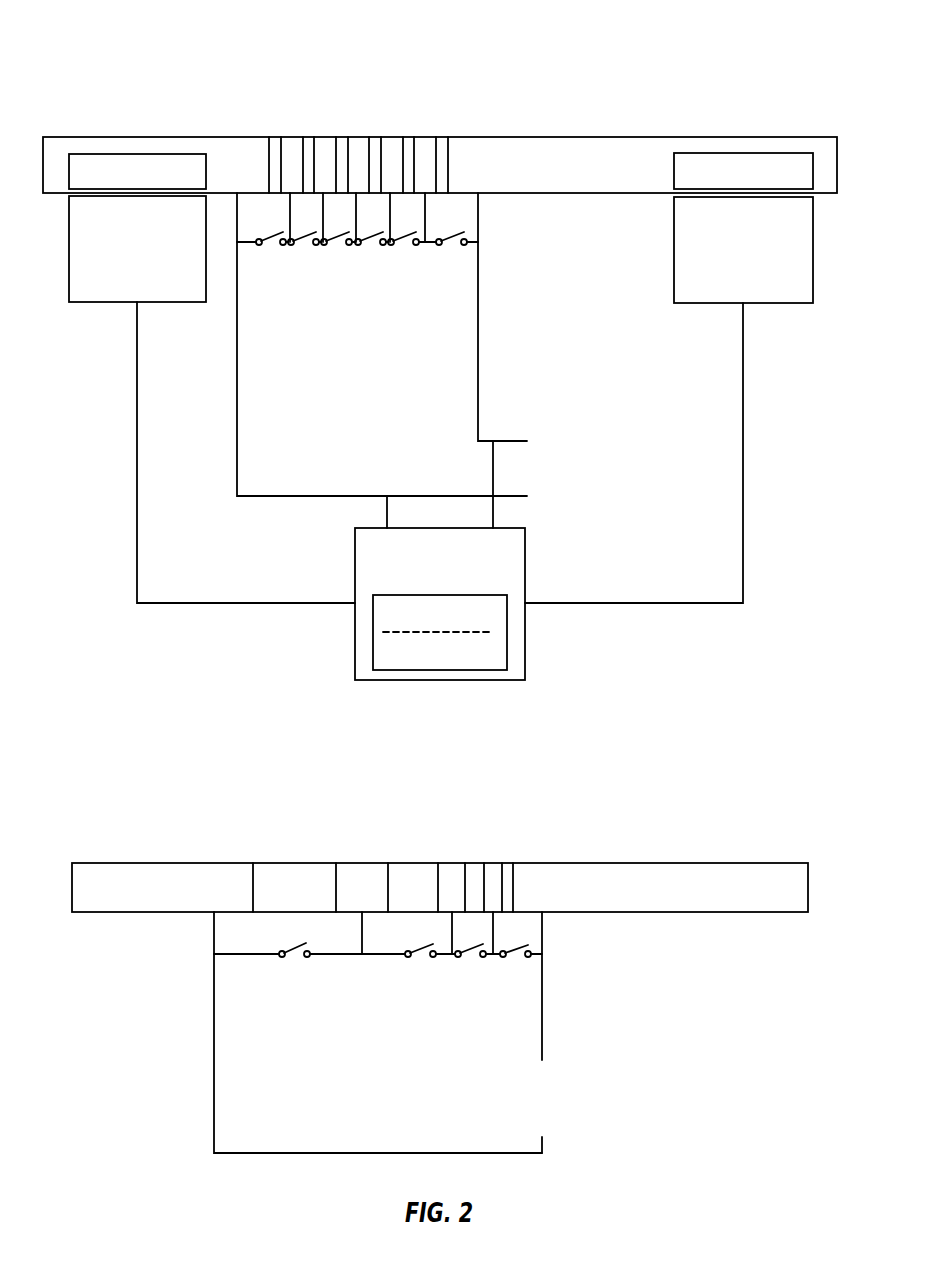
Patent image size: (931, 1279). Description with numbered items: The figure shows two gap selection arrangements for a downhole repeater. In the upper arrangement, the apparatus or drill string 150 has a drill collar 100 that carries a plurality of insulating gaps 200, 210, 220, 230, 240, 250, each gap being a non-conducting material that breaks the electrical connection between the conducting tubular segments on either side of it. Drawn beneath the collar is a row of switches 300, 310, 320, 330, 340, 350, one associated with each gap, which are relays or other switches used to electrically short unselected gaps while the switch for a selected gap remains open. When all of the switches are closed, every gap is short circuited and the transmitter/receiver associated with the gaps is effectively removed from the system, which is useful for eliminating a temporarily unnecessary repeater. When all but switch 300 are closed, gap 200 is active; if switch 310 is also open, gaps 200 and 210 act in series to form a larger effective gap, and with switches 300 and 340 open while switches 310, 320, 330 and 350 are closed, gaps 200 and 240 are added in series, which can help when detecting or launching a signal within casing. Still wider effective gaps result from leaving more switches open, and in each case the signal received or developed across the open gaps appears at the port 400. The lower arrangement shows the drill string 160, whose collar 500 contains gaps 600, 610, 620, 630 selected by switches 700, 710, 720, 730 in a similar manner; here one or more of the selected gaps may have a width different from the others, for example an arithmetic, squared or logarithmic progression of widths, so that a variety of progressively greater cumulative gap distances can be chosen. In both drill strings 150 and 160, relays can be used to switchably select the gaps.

The apparatus 150 is at (156, 46).
The drill collar 100 is at (105, 135).
The insulating gap 250 is at (276, 137).
The insulating gap 240 is at (308, 137).
The insulating gap 230 is at (342, 137).
The insulating gap 220 is at (373, 137).
The insulating gap 210 is at (408, 137).
The insulating gap 200 is at (443, 137).
The switch 350 is at (265, 245).
The switch 340 is at (301, 241).
The switch 330 is at (336, 243).
The switch 320 is at (371, 241).
The switch 310 is at (406, 243).
The switch 300 is at (452, 242).
The port 400 is at (610, 392).
The drill string 160 is at (160, 775).
The transmission line / bus 500 is at (135, 863).
The gap 630 is at (295, 863).
The gap 620 is at (412, 863).
The gap 610 is at (473, 863).
The gap 600 is at (507, 863).
The switch 730 is at (293, 958).
The switch 720 is at (413, 957).
The switch 710 is at (475, 953).
The switch 700 is at (513, 957).